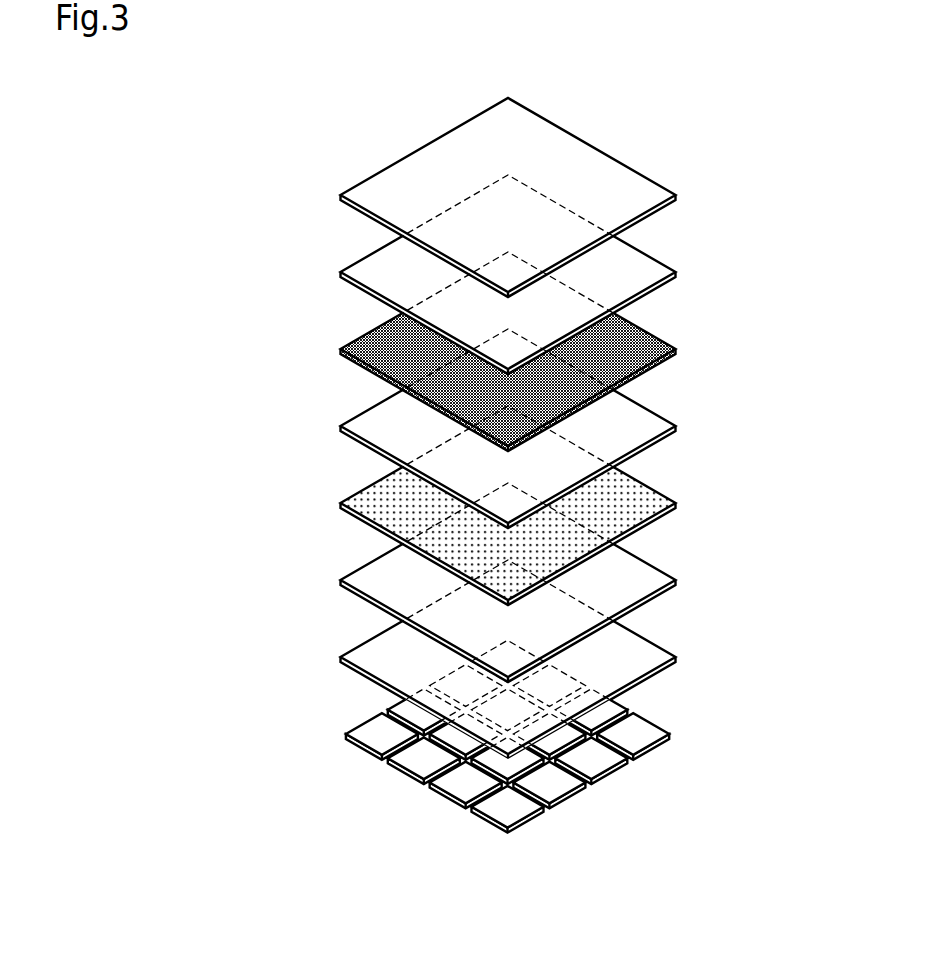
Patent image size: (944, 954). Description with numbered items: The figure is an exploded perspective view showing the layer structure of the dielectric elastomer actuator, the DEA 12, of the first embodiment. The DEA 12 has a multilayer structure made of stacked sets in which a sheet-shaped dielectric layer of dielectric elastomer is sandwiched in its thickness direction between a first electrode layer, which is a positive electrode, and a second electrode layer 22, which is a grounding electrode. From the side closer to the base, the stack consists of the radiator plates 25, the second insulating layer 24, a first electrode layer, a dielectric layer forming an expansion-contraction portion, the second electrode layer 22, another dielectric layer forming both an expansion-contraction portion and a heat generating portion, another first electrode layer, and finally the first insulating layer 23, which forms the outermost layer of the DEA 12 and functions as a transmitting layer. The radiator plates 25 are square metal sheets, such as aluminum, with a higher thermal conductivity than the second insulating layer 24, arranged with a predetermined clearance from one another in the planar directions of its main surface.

The DEA 12 is at (287, 90).
The second electrode layer 22 is at (521, 428).
The first insulating layer 23 is at (521, 197).
The second insulating layer 24 is at (521, 659).
The radiator plates 25 is at (523, 736).